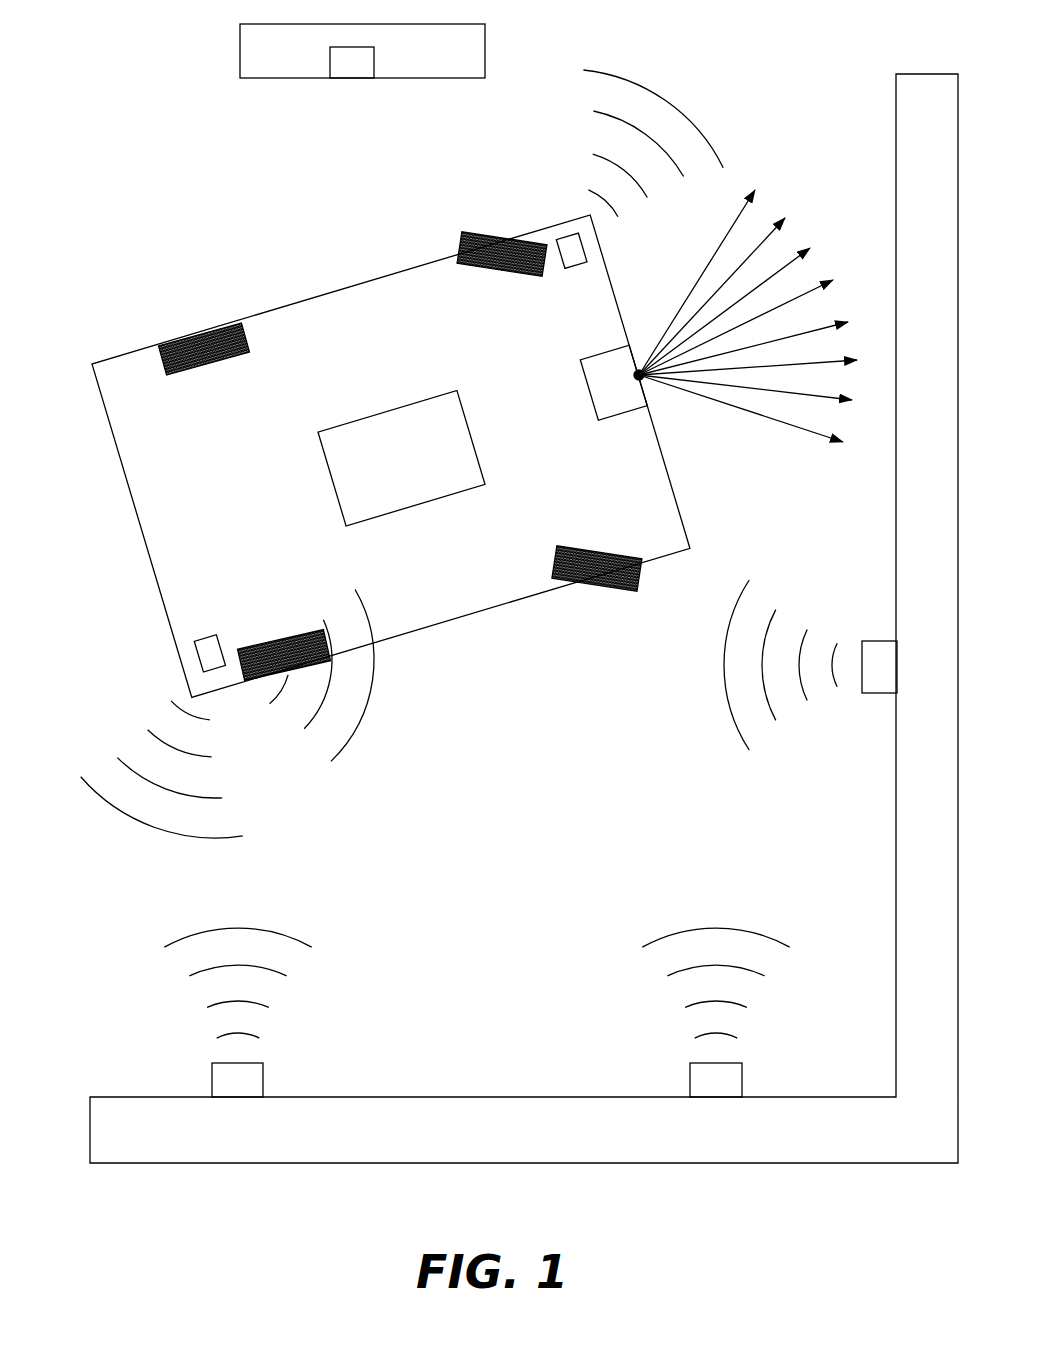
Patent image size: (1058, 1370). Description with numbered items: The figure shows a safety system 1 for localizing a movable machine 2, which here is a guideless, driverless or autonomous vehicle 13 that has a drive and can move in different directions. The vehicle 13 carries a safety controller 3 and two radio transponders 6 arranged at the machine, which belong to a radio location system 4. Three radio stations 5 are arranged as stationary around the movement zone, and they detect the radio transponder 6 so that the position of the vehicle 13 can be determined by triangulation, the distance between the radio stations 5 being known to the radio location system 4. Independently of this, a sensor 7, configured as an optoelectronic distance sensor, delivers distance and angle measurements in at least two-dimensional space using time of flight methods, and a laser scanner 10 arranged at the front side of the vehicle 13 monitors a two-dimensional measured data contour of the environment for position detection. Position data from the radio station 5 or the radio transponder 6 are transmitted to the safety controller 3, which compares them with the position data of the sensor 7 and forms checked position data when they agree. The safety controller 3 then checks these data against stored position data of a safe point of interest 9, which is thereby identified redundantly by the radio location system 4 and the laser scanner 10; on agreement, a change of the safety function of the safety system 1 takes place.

The safety system 1 is at (795, 88).
The movable machine 2 is at (474, 436).
The safety controller 3 is at (401, 458).
The radio location system 4 is at (130, 875).
The radio stations 5 is at (227, 1082).
The radio transponder 6 is at (570, 247).
The sensor 7 is at (588, 413).
The safe point of interest 9 is at (350, 80).
The laser scanner 10 is at (590, 389).
The vehicle 13 is at (391, 456).